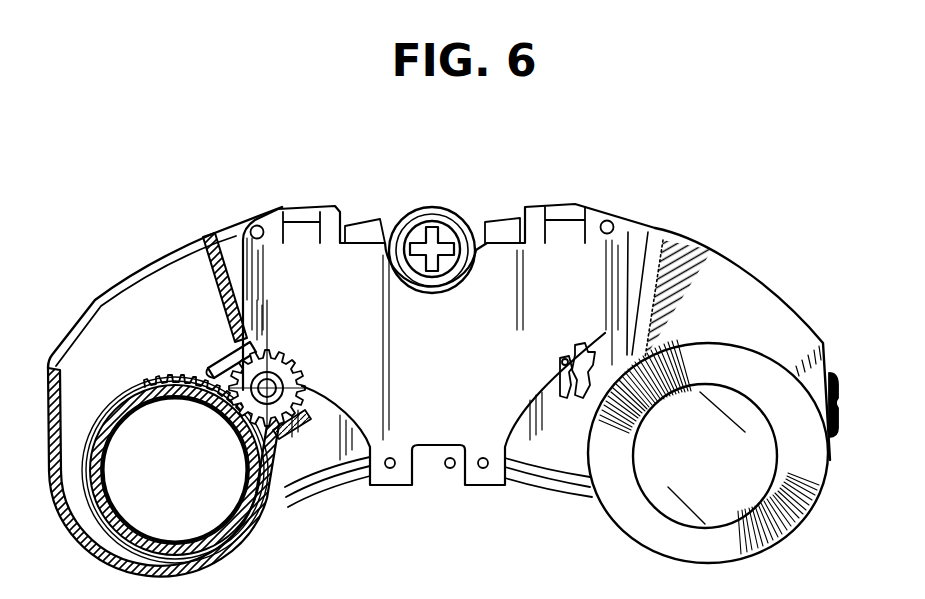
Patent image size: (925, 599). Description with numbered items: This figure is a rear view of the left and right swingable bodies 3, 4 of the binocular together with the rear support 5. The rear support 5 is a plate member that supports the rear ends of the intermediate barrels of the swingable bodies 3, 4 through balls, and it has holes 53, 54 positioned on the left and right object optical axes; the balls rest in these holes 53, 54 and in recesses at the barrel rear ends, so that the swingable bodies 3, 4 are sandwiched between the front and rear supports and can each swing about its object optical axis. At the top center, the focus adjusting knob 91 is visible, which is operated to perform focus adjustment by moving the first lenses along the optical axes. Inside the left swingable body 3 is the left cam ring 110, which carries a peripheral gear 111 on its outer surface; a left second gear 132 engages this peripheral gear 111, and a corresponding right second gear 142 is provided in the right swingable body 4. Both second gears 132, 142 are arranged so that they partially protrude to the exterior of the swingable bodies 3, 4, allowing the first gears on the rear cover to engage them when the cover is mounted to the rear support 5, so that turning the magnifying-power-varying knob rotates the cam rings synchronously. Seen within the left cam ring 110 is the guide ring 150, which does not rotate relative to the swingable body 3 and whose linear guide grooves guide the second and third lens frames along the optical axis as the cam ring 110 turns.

The left swingable body 3 is at (122, 291).
The right swingable body 4 is at (729, 263).
The rear support 5 is at (428, 412).
The focus adjusting knob 91 is at (436, 208).
The hole 53 is at (287, 366).
The left second gear 132 is at (303, 390).
The left cam ring 110 is at (143, 382).
The peripheral gear 111 is at (178, 382).
The guide ring 150 is at (103, 462).
The hole 54 is at (574, 352).
The right second gear 142 is at (562, 382).